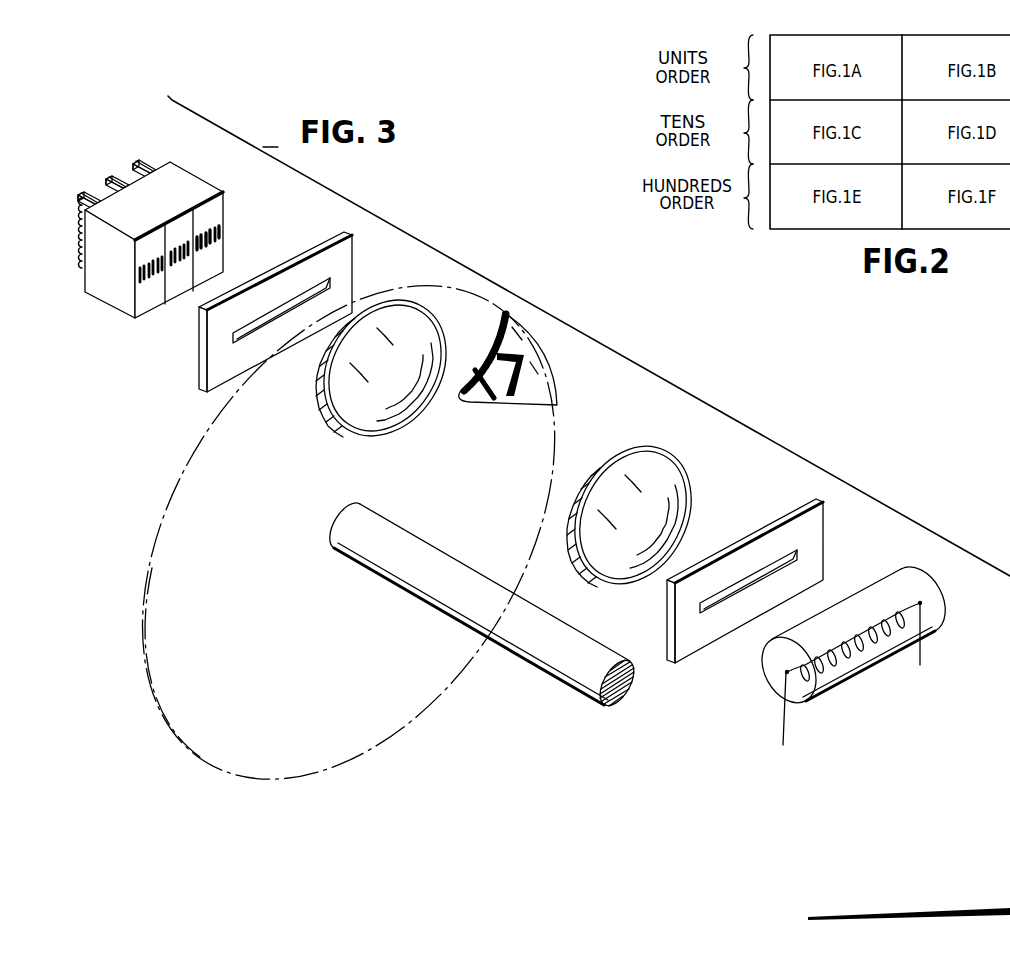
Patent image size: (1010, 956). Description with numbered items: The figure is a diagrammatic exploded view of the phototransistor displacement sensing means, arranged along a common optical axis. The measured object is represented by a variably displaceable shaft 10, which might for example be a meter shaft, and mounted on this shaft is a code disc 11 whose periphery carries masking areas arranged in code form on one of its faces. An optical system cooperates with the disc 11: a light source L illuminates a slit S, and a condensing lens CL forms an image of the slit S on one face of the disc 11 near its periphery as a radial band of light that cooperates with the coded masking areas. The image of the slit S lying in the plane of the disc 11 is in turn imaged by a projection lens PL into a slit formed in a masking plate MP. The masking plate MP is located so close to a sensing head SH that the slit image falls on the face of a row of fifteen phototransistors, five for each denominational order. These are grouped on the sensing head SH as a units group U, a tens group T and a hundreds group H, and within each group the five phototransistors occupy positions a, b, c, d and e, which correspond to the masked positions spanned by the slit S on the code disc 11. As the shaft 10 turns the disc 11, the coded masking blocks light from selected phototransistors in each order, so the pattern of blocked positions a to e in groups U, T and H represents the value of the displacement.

The sensing head SH is at (203, 182).
The hundreds order phototransistor group H is at (213, 210).
The tens order phototransistor group T is at (182, 223).
The units order phototransistor group U is at (147, 250).
The phototransistor position a is at (220, 224).
The phototransistor position b is at (216, 237).
The phototransistor position c is at (212, 240).
The phototransistor position d is at (207, 243).
The phototransistor position e is at (202, 247).
The masking plate MP is at (347, 272).
The projection lens PL is at (328, 407).
The condensing lens CL is at (693, 502).
The slit S is at (812, 538).
The light source L is at (925, 602).
The shaft 10 is at (531, 673).
The code disc 11 is at (150, 546).